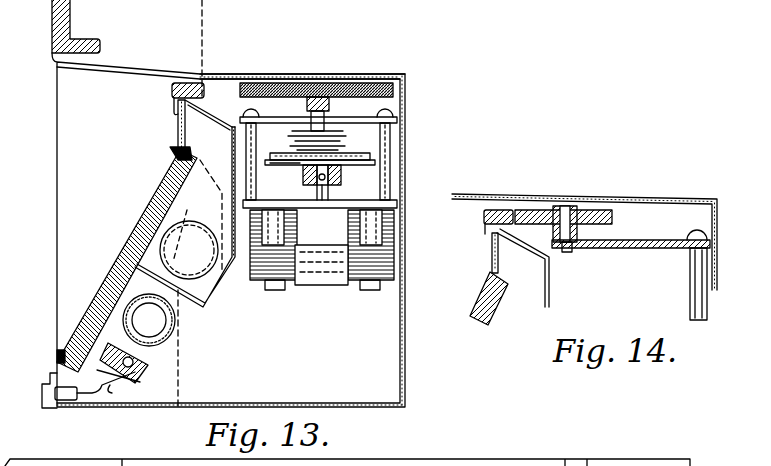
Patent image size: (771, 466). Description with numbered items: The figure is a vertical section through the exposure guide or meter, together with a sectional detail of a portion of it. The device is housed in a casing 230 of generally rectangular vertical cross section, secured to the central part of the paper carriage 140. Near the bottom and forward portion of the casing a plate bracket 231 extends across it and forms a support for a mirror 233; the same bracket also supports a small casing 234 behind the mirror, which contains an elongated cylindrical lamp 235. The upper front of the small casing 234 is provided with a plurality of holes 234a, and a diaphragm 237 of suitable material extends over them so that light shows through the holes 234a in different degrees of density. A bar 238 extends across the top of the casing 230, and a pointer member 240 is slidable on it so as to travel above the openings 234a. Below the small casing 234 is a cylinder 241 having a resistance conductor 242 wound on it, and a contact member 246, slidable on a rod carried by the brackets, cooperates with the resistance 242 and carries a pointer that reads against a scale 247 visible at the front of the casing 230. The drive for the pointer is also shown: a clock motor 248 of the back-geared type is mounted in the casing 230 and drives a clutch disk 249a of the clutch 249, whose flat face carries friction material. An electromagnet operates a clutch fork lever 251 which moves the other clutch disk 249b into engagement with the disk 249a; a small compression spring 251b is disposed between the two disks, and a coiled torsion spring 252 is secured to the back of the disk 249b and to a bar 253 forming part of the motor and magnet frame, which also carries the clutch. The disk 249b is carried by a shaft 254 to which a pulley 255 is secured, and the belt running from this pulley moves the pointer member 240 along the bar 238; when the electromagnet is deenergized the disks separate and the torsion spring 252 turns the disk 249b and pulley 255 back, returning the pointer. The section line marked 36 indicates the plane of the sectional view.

In FIG. 13, the casing 230 is at (403, 373).
In FIG. 14, the casing 230 is at (583, 197).
In FIG. 13, the plate bracket 231 is at (60, 357).
In FIG. 13, the mirror 233 is at (135, 232).
In FIG. 14, the mirror 233 is at (478, 297).
In FIG. 13, the small casing 234 is at (212, 290).
In FIG. 14, the small casing 234 is at (548, 293).
In FIG. 13, the holes 234a is at (178, 142).
In FIG. 14, the holes 234a is at (493, 260).
In FIG. 13, the lamp 235 is at (188, 238).
In FIG. 13, the diaphragm 237 is at (185, 118).
In FIG. 13, the bar 238 is at (207, 78).
In FIG. 14, the bar 238 is at (498, 212).
In FIG. 13, the pointer member 240 is at (178, 100).
In FIG. 14, the pointer member 240 is at (487, 222).
In FIG. 13, the cylinder 241 is at (168, 318).
In FIG. 13, the resistance conductor 242 is at (165, 345).
In FIG. 13, the contact member 246 is at (140, 375).
In FIG. 13, the scale 247 is at (55, 385).
In FIG. 13, the clock motor 248 is at (312, 258).
In FIG. 13, the clutch 249 is at (356, 172).
In FIG. 13, the clutch disk 249a is at (370, 168).
In FIG. 13, the clutch disk 249b is at (350, 150).
In FIG. 13, the clutch fork lever 251 is at (324, 144).
In FIG. 13, the compression spring 251b is at (296, 165).
In FIG. 13, the coiled torsion spring 252 is at (315, 162).
In FIG. 13, the bar 253 is at (395, 110).
In FIG. 14, the bar 253 is at (618, 248).
In FIG. 13, the shaft 254 is at (322, 118).
In FIG. 13, the pulley 255 is at (350, 84).
In FIG. 14, the pulley 255 is at (582, 223).
In FIG. 13, the section line 36 is at (205, 420).
In FIG. 13, the paper carriage 140 is at (563, 460).